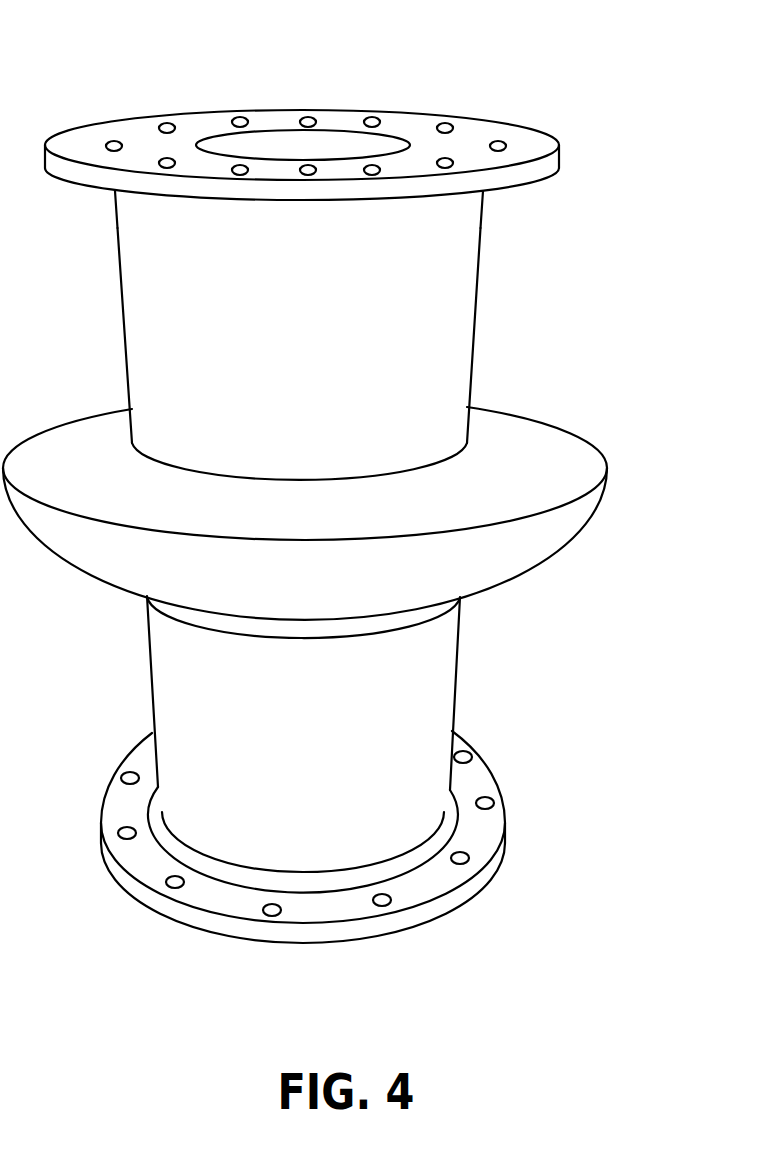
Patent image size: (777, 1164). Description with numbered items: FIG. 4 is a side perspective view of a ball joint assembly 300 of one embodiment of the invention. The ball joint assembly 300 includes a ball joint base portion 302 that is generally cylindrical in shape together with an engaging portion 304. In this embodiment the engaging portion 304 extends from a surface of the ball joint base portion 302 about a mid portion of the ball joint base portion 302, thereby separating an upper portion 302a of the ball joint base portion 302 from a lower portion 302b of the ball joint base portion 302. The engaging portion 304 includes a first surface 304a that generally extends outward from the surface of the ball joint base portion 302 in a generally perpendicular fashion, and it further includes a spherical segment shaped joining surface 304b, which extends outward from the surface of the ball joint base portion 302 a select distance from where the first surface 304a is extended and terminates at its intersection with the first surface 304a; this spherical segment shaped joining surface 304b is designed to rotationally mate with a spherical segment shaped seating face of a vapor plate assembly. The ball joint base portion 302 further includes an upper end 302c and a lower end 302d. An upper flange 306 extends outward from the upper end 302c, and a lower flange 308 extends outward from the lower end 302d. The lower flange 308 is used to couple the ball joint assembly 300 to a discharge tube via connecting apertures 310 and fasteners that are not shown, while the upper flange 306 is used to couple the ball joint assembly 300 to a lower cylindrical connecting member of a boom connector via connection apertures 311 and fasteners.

The ball joint assembly 300 is at (527, 351).
The ball joint base portion 302 is at (457, 258).
The upper portion 302a is at (457, 340).
The lower portion 302b is at (427, 680).
The upper end 302c is at (177, 193).
The lower end 302d is at (307, 880).
The engaging portion 304 is at (572, 463).
The first surface 304a is at (535, 435).
The spherical segment shaped joining surface 304b is at (563, 537).
The upper flange 306 is at (427, 190).
The lower flange 308 is at (477, 835).
The connecting apertures 310 is at (463, 747).
The connection apertures 311 is at (308, 117).